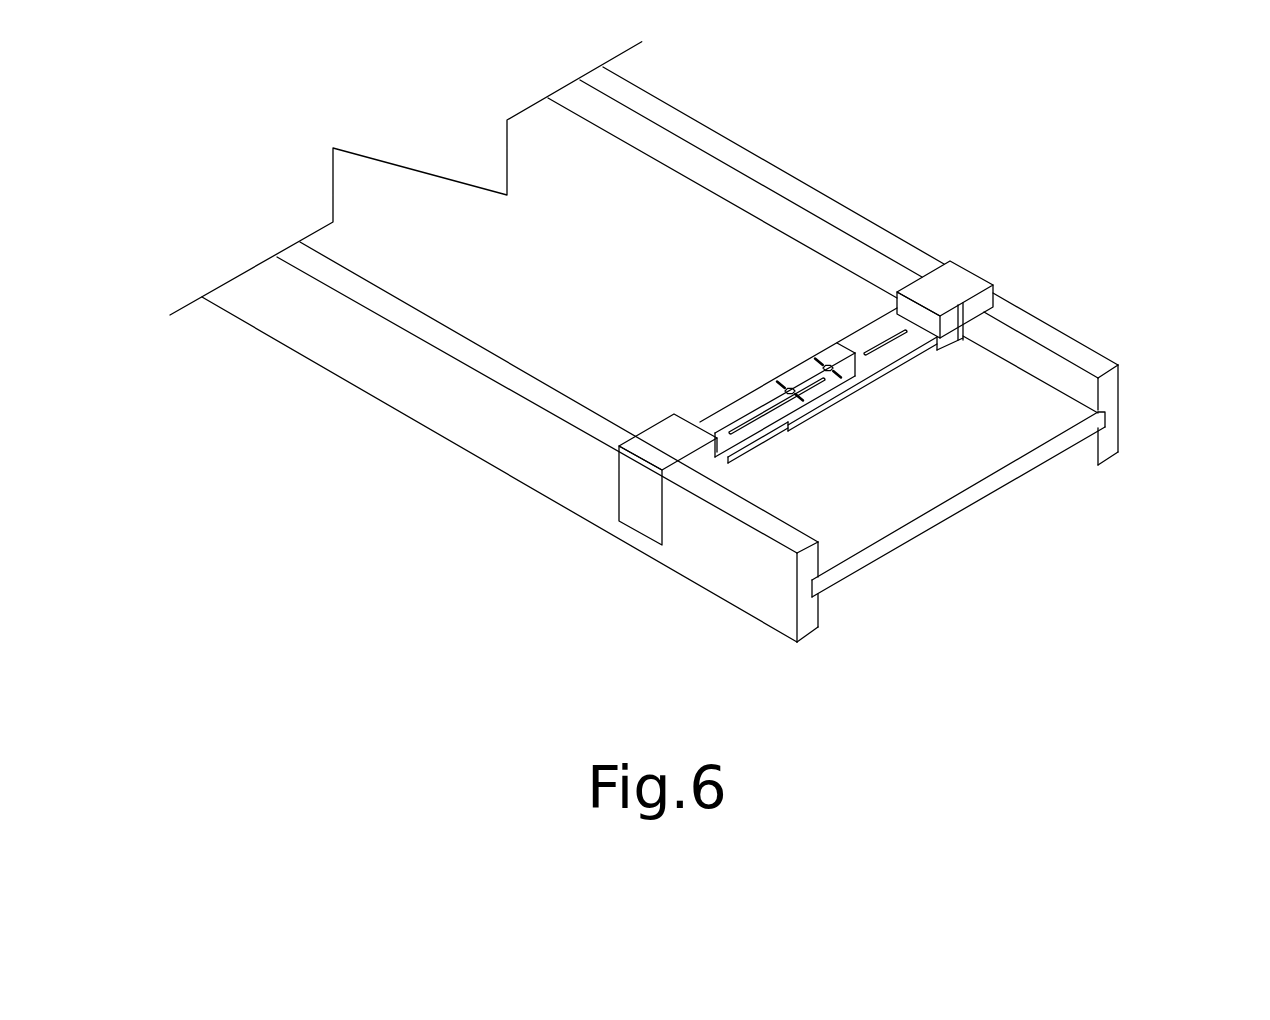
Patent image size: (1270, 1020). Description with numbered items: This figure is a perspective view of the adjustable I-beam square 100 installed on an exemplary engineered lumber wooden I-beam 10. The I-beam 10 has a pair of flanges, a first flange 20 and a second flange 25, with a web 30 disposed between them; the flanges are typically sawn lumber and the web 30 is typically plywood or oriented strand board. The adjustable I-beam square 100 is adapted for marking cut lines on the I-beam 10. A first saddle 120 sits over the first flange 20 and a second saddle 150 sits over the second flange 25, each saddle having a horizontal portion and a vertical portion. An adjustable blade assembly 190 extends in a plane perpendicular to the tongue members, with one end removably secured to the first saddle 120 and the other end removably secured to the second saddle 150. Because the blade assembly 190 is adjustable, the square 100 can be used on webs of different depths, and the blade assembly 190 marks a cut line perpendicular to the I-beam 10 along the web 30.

The wooden I-beam 10 is at (467, 476).
The first flange 20 is at (733, 553).
The second flange 25 is at (1070, 352).
The web 30 is at (948, 473).
The adjustable I-beam square 100 is at (792, 329).
The first saddle 120 is at (650, 411).
The second saddle 150 is at (962, 252).
The adjustable blade assembly 190 is at (796, 331).